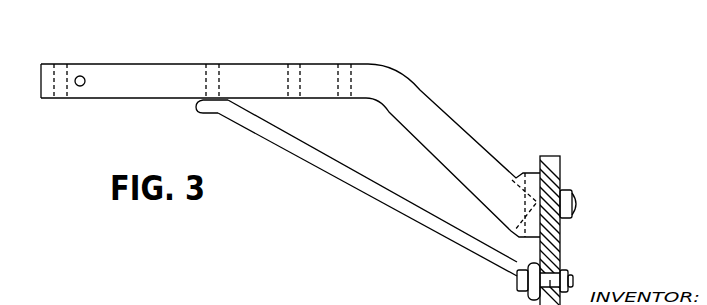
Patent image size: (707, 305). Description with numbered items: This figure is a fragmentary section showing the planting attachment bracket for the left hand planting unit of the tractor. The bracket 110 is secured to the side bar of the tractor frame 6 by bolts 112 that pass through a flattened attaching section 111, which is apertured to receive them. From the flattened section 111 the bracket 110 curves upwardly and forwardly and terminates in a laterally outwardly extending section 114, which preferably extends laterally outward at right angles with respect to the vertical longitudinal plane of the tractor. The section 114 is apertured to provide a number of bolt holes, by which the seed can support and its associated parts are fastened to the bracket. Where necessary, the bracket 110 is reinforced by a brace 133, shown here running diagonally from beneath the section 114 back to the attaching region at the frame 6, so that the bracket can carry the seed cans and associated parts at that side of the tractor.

The bracket 110 is at (279, 61).
The laterally outwardly extending section 114 is at (153, 72).
The brace 133 is at (343, 176).
The flattened attaching section 111 is at (510, 182).
The frame 6 is at (547, 162).
The bolt 112 is at (570, 197).